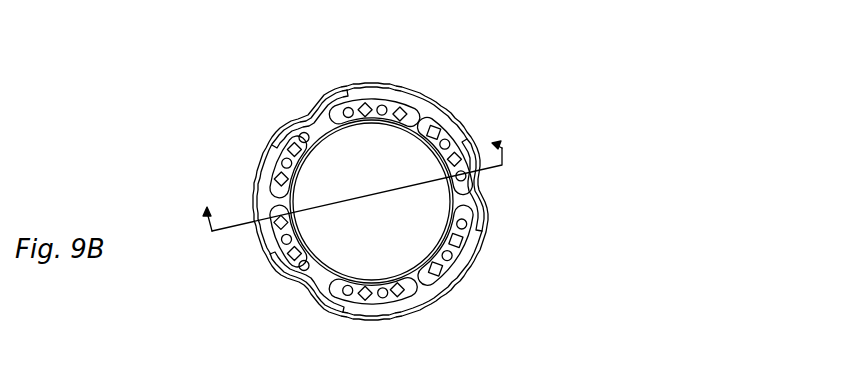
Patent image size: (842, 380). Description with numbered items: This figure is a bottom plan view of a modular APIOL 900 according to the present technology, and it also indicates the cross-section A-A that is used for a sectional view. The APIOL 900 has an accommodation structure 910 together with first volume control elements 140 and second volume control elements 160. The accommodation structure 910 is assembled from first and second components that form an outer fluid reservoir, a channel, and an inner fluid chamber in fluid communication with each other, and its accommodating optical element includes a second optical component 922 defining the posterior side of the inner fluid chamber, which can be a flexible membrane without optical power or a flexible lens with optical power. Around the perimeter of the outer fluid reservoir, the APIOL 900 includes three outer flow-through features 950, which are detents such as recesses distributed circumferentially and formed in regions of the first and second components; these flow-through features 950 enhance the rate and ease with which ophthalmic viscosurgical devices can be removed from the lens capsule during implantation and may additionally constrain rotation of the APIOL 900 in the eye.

The modular APIOL 900 is at (469, 191).
The accommodation structure 910 is at (426, 301).
The second optical component 922 is at (353, 180).
The outer flow-through features 950 is at (311, 104).
The first volume control elements 140 is at (447, 134).
The second volume control elements 160 is at (468, 241).